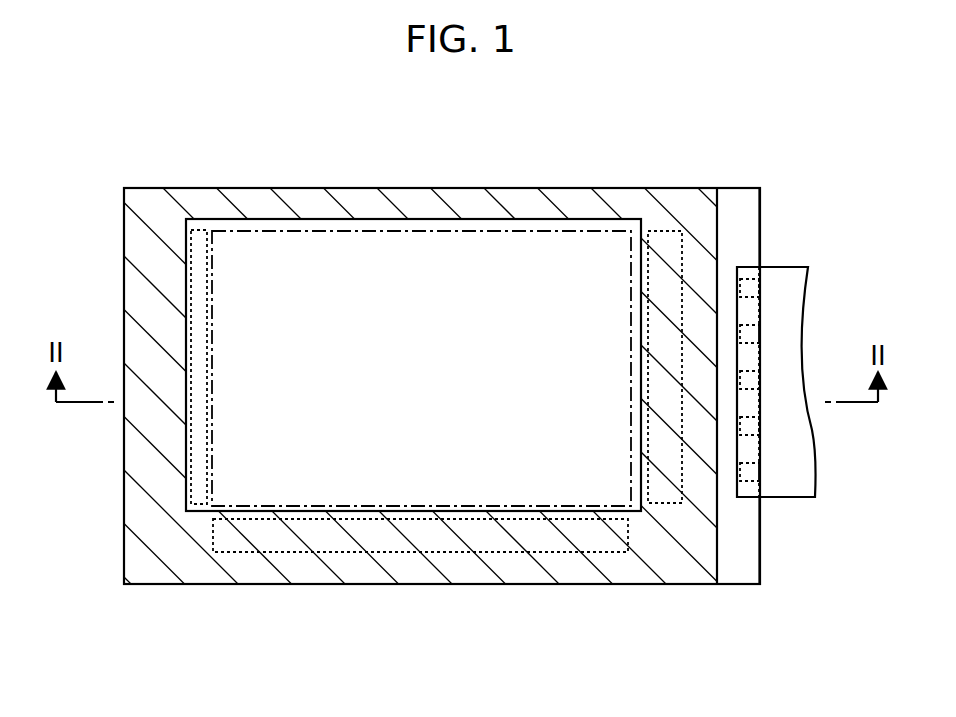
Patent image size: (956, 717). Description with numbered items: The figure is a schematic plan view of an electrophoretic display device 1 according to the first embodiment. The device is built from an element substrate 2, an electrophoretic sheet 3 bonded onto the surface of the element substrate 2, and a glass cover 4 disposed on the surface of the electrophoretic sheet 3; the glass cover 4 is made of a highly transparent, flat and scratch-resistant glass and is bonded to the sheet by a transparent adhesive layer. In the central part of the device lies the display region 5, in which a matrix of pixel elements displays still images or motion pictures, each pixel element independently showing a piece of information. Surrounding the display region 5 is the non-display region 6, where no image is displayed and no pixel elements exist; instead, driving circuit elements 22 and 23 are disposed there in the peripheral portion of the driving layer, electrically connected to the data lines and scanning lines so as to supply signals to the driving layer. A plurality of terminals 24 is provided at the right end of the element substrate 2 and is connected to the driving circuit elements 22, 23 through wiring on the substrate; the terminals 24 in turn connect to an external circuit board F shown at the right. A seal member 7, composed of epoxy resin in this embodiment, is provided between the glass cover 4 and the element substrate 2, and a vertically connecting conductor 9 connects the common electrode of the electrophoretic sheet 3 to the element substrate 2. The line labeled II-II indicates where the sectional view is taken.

The electrophoretic display device 1 is at (782, 156).
The element substrate 2 is at (760, 213).
The electrophoretic sheet 3 is at (257, 211).
The glass cover 4 is at (718, 218).
The display region 5 is at (346, 266).
The non-display region 6 is at (606, 220).
The seal member 7 is at (497, 218).
The vertically connecting conductor 9 is at (202, 445).
The driving circuit element 22 is at (665, 495).
The driving circuit element 23 is at (297, 542).
The terminals 24 is at (745, 487).
The external circuit board F is at (792, 473).